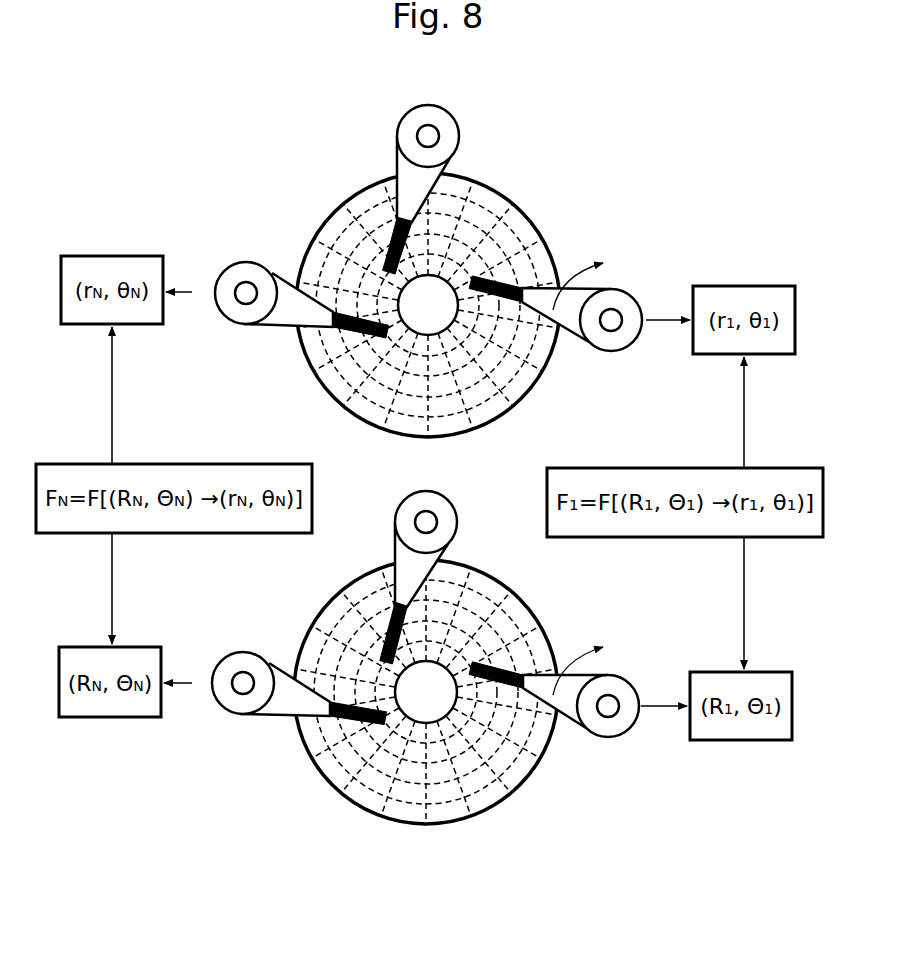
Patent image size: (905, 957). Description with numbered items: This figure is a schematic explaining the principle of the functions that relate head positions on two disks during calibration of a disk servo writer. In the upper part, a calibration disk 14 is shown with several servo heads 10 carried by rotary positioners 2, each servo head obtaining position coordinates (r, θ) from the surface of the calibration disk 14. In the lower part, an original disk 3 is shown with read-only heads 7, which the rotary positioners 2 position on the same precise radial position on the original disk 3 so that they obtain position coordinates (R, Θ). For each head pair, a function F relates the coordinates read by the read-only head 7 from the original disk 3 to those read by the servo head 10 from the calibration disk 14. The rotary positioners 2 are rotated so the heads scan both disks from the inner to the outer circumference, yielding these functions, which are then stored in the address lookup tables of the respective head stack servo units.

The rotary positioner 2 is at (408, 125).
The servo head 10 is at (405, 237).
The calibration disk 14 is at (335, 230).
The original disk 3 is at (328, 612).
The read-only head 7 is at (388, 618).